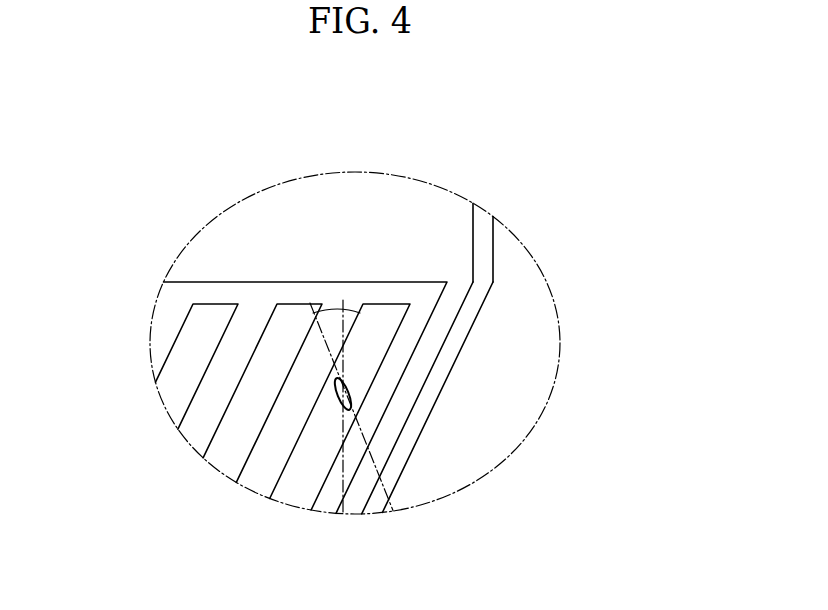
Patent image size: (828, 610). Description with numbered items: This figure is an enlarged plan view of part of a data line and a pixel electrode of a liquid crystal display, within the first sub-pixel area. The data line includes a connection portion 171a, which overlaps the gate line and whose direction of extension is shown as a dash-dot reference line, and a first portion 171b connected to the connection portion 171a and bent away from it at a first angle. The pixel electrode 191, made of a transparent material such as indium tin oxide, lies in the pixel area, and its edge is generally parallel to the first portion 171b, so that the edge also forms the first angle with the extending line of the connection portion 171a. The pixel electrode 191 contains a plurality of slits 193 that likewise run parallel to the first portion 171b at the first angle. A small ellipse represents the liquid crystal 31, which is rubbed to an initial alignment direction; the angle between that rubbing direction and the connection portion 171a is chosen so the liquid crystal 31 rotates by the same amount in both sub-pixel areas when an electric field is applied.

The pixel electrode 191 is at (210, 282).
The slit 193 is at (232, 397).
The connection portion 171a is at (493, 250).
The first portion 171b is at (462, 348).
The liquid crystal 31 is at (337, 397).